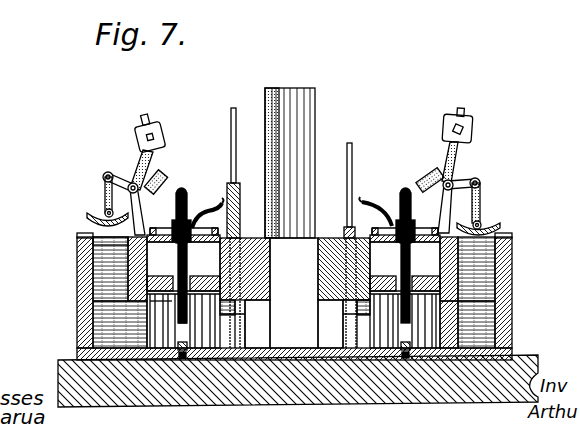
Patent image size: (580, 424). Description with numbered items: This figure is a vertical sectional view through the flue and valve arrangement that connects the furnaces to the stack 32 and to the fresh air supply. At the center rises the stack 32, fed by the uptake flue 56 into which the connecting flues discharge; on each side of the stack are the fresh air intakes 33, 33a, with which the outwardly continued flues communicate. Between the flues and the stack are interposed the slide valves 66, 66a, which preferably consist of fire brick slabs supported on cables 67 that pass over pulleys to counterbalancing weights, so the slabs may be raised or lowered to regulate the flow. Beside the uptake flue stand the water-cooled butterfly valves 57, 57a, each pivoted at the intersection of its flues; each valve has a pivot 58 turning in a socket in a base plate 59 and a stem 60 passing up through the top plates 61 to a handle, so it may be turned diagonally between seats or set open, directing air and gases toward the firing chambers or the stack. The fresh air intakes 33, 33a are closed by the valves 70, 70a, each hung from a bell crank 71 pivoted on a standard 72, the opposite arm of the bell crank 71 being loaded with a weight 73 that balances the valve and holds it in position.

The stack 32 is at (314, 118).
The fresh air intake 33 is at (490, 283).
The fresh air intake 33a is at (82, 295).
The uptake flue 56 is at (294, 293).
The water-cooled butterfly valve 57 is at (448, 327).
The water-cooled butterfly valve 57a is at (180, 333).
The pivot 58 is at (182, 360).
The base plate 59 is at (163, 352).
The stem 60 is at (128, 260).
The top plates 61 is at (176, 216).
The slide valve 66 is at (318, 232).
The slide valve 66a is at (230, 183).
The cable 67 is at (209, 210).
The valve 70 is at (492, 227).
The valve 70a is at (100, 216).
The bell crank 71 is at (117, 166).
The standard 72 is at (158, 173).
The weight 73 is at (150, 122).